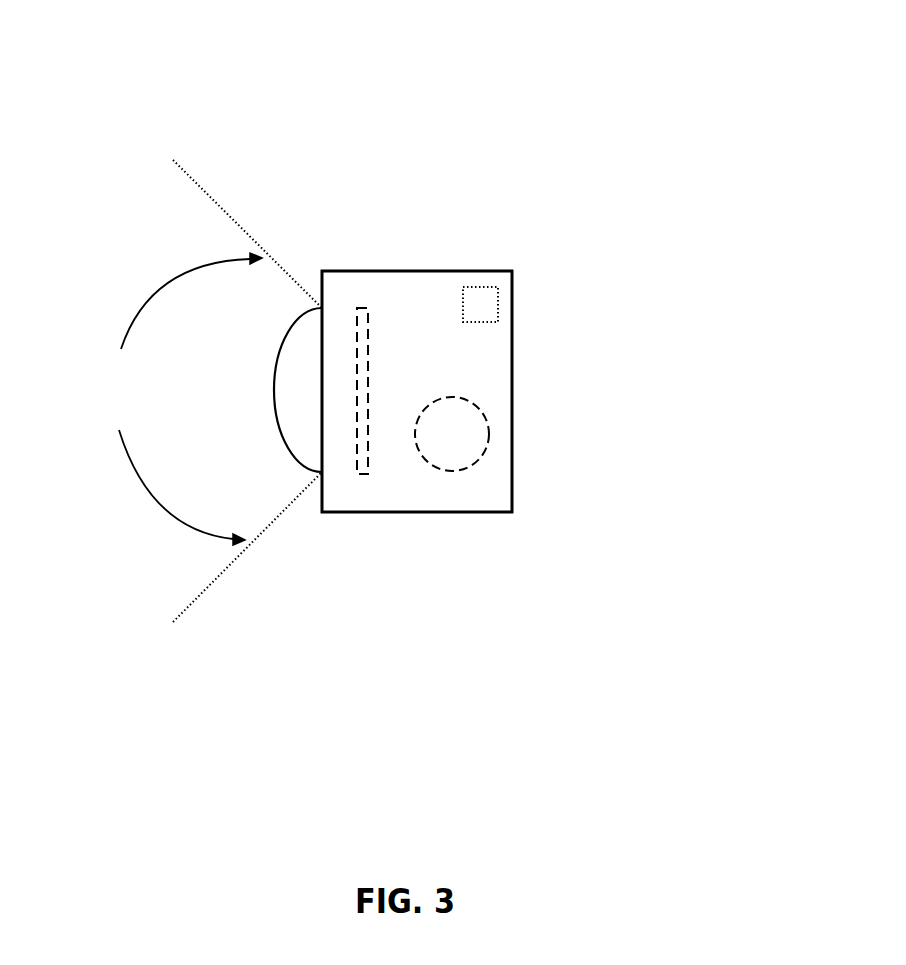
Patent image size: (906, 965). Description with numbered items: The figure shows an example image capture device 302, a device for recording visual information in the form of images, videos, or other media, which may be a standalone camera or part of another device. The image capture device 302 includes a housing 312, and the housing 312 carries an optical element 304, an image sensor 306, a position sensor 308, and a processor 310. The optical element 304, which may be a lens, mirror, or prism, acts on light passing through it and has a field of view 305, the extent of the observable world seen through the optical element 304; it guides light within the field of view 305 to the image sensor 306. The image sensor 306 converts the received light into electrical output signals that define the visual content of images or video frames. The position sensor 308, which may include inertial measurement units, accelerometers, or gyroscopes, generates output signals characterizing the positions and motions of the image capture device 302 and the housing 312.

The image capture device 302 is at (479, 133).
The optical element 304 is at (297, 462).
The field of view 305 is at (173, 391).
The image sensor 306 is at (365, 308).
The position sensor 308 is at (497, 309).
The processor 310 is at (489, 434).
The housing 312 is at (428, 512).